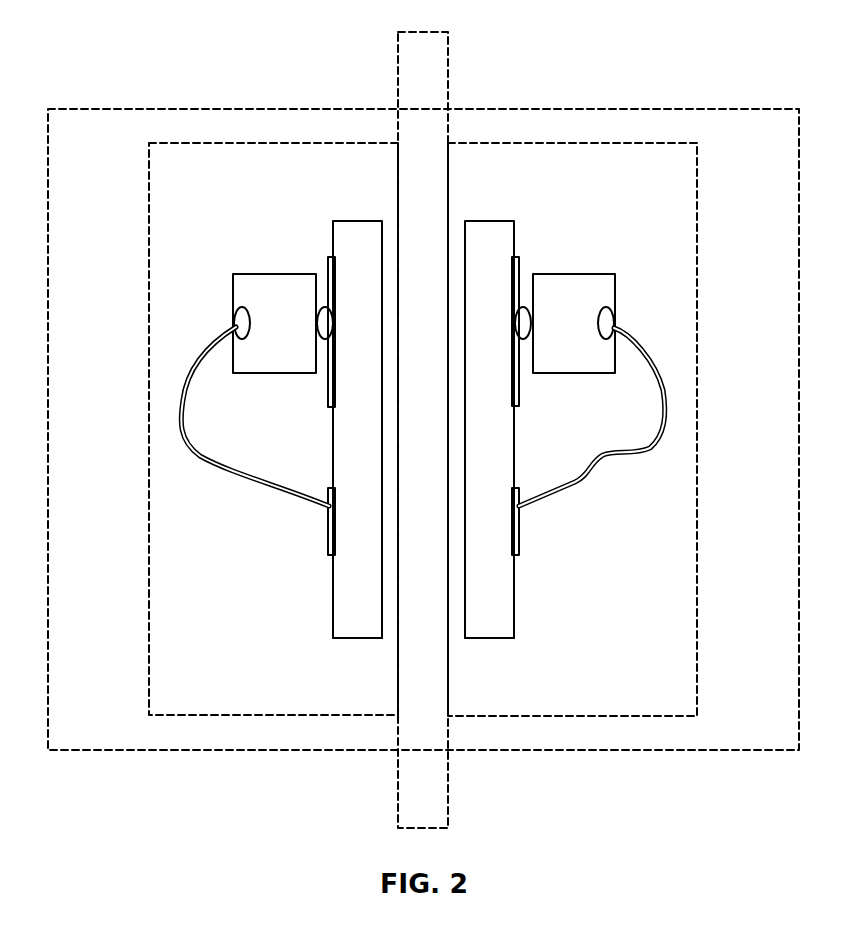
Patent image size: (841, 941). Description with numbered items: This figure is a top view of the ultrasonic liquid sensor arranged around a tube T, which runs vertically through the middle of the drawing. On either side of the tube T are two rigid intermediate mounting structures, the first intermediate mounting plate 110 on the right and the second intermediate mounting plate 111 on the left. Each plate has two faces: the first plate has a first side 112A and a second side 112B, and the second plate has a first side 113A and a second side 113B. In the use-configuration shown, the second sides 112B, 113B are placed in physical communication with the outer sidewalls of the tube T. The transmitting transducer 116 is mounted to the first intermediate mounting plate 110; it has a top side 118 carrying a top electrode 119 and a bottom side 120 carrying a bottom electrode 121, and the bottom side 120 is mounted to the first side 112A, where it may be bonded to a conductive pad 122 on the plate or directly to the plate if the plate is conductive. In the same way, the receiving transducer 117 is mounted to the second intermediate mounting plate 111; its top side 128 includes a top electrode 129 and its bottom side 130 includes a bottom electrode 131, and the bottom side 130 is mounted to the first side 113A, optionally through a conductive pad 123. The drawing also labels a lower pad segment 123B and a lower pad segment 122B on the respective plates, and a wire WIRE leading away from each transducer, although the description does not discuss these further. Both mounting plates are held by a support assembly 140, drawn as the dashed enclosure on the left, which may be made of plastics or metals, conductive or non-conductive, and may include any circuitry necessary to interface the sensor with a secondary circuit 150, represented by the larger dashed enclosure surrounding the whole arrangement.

The secondary circuit 150 is at (120, 183).
The support assembly 140 is at (210, 183).
The tube T is at (426, 773).
The second intermediate mounting plate 111 is at (358, 233).
The first intermediate mounting plate 110 is at (490, 233).
The first side 113A is at (333, 608).
The second side 113B is at (381, 610).
The first side 112A is at (514, 607).
The second side 112B is at (466, 612).
The conductive pad 123 is at (326, 268).
The first electrode strip lower portion 123B is at (328, 540).
The conductive pad 122 is at (518, 270).
The second electrode strip lower portion 122B is at (519, 538).
The receiving transducer 117 is at (298, 312).
The transmitting transducer 116 is at (597, 312).
The top side 128 is at (233, 288).
The bottom side 130 is at (315, 290).
The bottom side 120 is at (534, 290).
The top side 118 is at (616, 288).
The top electrode 129 is at (236, 323).
The bottom electrode 131 is at (320, 330).
The bottom electrode 121 is at (528, 330).
The top electrode 119 is at (612, 323).
The wire WIRE is at (182, 432).